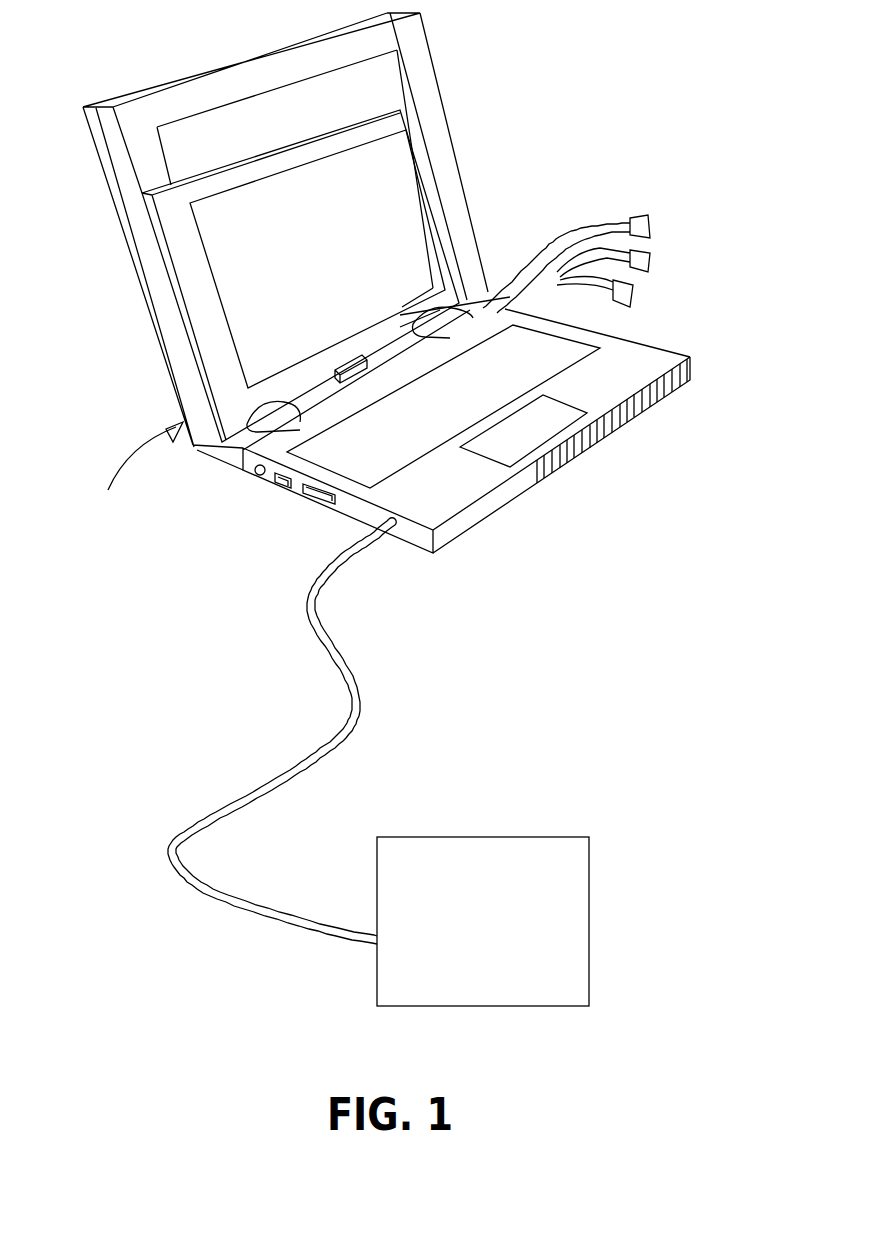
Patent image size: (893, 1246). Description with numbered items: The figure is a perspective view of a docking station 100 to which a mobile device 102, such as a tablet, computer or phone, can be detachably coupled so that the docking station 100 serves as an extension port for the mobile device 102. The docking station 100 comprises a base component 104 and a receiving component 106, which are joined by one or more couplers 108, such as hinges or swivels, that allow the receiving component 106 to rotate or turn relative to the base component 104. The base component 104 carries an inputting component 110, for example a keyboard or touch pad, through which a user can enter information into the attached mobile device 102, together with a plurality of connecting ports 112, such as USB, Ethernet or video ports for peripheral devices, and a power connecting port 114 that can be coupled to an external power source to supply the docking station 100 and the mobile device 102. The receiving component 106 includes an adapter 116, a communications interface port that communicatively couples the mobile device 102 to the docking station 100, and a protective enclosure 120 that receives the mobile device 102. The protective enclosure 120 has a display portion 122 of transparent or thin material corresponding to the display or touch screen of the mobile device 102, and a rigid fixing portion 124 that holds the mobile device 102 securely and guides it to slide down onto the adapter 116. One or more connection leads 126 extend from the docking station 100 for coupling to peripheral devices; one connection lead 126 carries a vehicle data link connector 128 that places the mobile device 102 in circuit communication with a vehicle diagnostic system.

The docking station 100 is at (797, 332).
The mobile device 102 is at (230, 178).
The base component 104 is at (530, 478).
The receiving component 106 is at (131, 473).
The coupler 108 is at (278, 417).
The inputting component 110 is at (513, 422).
The connecting ports 112 is at (318, 495).
The power connecting port 114 is at (258, 480).
The adapter 116 is at (365, 372).
The protective enclosure 120 is at (428, 40).
The display portion 122 is at (316, 128).
The fixing portion 124 is at (430, 90).
The connection lead 126 is at (650, 226).
The vehicle data link connector 128 is at (542, 836).